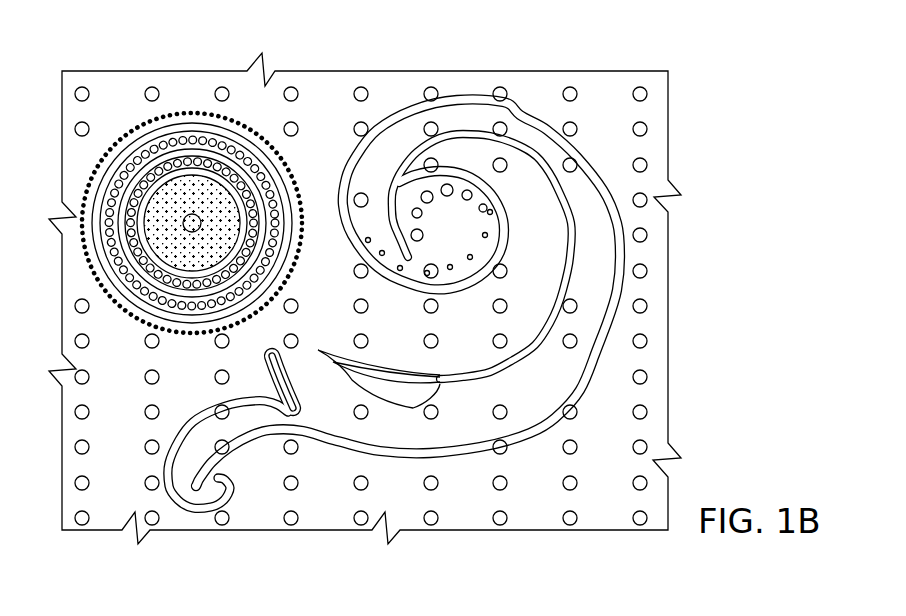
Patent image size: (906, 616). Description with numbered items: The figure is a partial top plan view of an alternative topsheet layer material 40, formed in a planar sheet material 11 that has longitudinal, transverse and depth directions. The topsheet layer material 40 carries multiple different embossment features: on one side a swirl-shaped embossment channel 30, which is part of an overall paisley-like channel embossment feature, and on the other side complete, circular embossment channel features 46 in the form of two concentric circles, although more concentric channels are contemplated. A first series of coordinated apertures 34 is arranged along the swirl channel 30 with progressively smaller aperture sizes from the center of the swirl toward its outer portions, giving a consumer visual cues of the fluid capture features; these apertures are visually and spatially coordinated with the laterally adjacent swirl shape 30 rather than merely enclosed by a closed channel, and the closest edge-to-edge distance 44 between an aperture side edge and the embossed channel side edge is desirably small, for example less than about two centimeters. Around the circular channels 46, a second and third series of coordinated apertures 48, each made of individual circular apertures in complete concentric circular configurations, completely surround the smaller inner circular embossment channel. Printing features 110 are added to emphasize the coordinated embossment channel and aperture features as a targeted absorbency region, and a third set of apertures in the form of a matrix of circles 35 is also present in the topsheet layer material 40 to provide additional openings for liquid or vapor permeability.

The planar sheet material 11 is at (531, 498).
The swirl-shaped embossment channel 30 is at (467, 132).
The first series of coordinated apertures 34 is at (455, 254).
The matrix of circles 35 is at (367, 85).
The topsheet layer material 40 is at (668, 73).
The edge-to-edge distance 44 is at (412, 215).
The circular embossment channel features 46 is at (175, 300).
The second and third series of coordinated apertures 48 is at (148, 271).
The printing features 110 is at (177, 180).